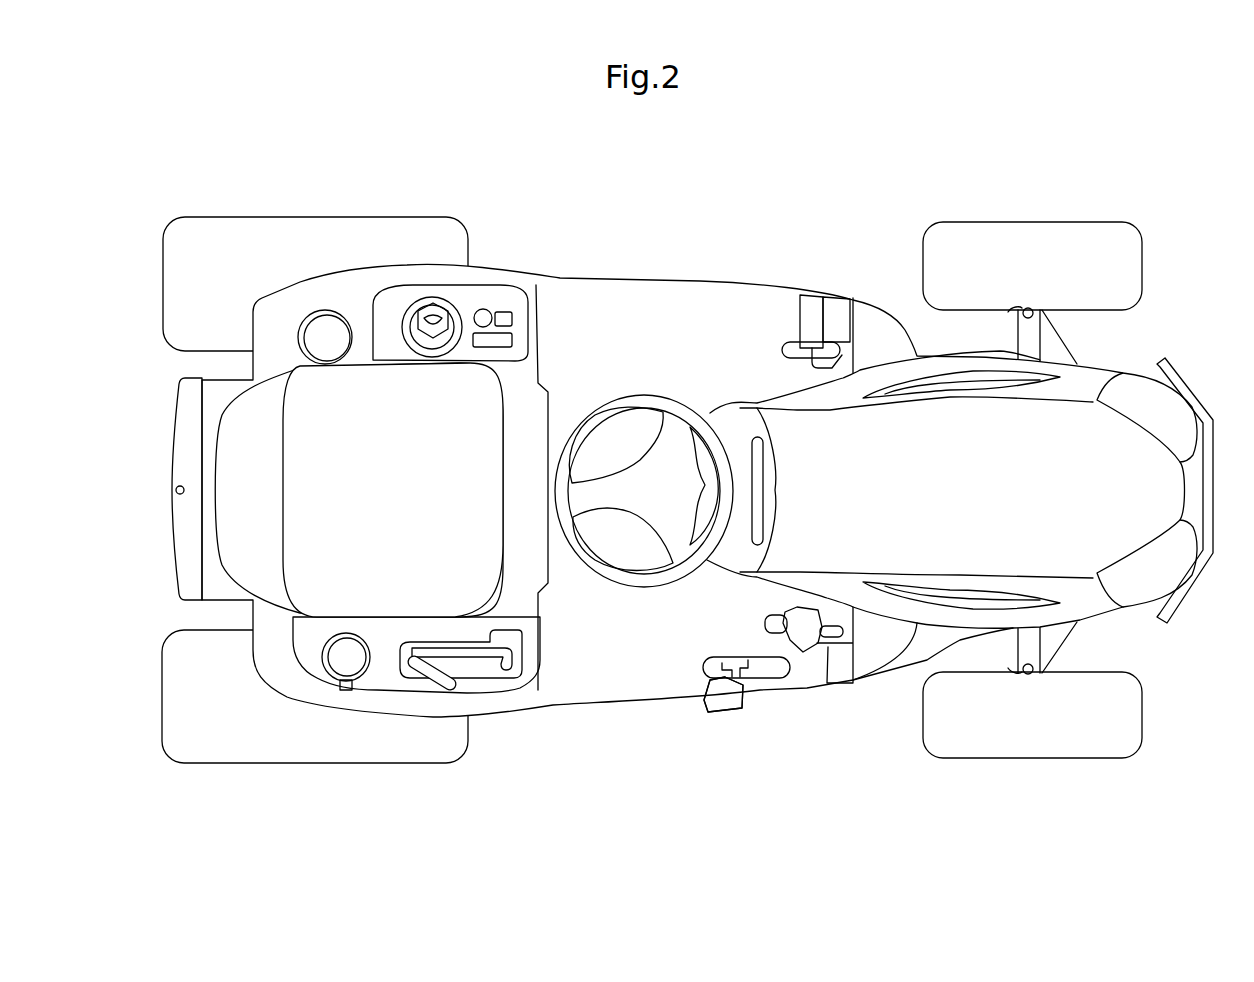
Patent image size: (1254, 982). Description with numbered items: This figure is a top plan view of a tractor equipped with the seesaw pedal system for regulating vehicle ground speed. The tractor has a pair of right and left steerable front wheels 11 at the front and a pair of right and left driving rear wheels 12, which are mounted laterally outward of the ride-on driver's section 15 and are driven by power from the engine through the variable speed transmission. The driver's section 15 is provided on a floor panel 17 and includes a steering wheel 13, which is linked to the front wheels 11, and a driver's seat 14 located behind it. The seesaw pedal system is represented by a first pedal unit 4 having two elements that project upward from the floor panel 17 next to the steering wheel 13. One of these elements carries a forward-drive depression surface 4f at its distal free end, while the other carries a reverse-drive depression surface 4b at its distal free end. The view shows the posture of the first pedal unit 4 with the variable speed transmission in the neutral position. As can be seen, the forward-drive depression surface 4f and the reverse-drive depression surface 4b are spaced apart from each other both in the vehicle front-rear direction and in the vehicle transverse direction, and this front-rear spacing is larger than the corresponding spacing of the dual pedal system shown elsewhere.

The first pedal unit 4 is at (746, 710).
The reverse-drive depression surface 4b is at (728, 712).
The forward-drive depression surface 4f is at (810, 636).
The front wheels 11 is at (1040, 222).
The rear wheels 12 is at (314, 222).
The steering wheel 13 is at (631, 396).
The driver's seat 14 is at (212, 527).
The driver's section 15 is at (655, 648).
The floor panel 17 is at (668, 300).